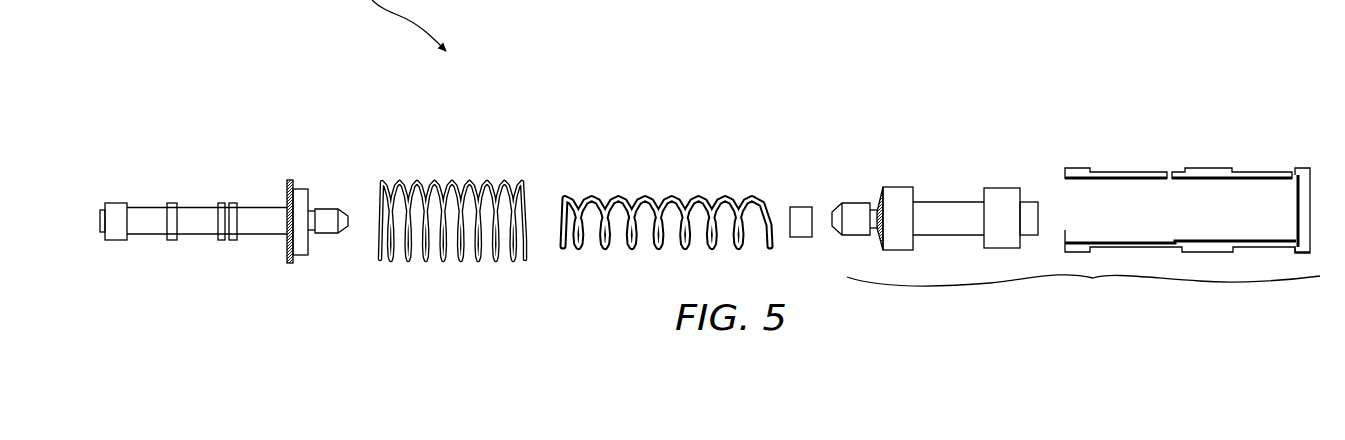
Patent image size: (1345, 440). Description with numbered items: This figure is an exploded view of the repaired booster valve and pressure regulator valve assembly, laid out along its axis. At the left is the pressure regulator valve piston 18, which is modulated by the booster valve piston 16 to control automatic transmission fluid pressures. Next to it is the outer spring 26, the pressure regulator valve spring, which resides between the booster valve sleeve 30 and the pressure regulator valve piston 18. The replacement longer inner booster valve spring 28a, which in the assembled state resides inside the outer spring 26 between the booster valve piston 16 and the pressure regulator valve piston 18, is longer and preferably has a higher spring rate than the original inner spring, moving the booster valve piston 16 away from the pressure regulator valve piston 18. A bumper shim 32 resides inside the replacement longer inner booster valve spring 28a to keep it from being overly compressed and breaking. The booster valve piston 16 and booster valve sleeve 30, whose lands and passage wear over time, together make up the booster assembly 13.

The pressure regulator valve piston 18 is at (203, 166).
The outer spring 26 is at (458, 159).
The replacement longer inner booster valve spring 28a is at (642, 175).
The bumper shim 32 is at (802, 195).
The booster valve piston 16 is at (928, 176).
The booster valve sleeve 30 is at (1126, 127).
The booster assembly 13 is at (1093, 278).